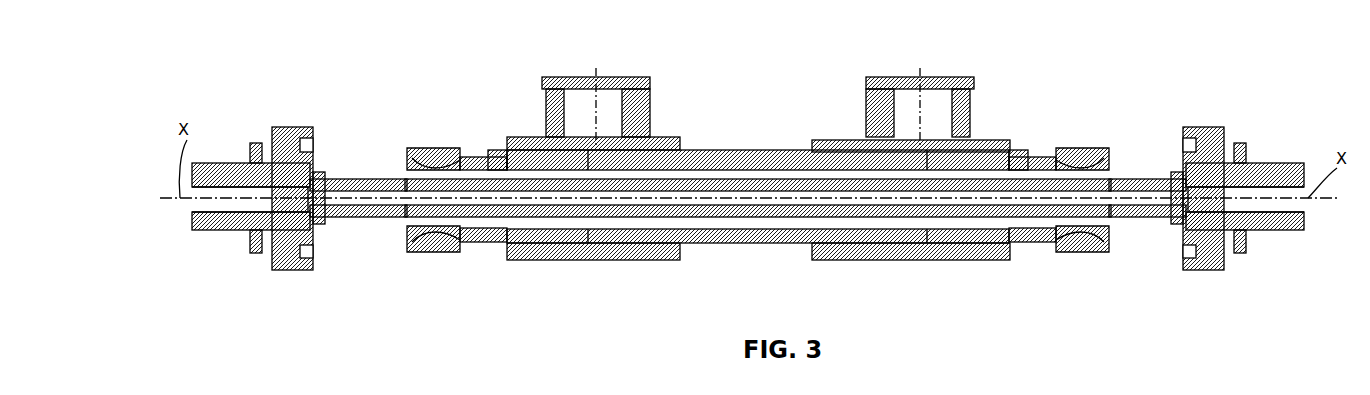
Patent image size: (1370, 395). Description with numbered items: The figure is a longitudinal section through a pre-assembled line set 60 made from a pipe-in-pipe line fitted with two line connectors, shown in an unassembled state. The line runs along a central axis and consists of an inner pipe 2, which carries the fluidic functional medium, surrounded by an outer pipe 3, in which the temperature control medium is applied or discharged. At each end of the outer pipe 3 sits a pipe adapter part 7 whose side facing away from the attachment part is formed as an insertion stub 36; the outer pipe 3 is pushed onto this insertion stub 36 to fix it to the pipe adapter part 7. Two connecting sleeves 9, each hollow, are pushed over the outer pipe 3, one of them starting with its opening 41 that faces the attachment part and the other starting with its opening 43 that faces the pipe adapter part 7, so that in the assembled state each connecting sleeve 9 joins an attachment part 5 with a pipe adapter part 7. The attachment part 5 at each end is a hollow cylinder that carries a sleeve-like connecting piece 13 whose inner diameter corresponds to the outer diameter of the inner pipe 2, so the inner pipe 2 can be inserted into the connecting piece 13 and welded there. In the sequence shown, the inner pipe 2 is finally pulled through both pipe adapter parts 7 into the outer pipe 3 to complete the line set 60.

The line set 60 is at (398, 84).
The inner pipe 2 is at (721, 182).
The outer pipe 3 is at (783, 150).
The attachment part 5 is at (288, 292).
The pipe adapter part 7 is at (463, 152).
The connecting sleeve 9 is at (650, 137).
The connecting piece 13 is at (377, 218).
The insertion stub 36 is at (540, 250).
The opening 41 is at (1006, 150).
The opening 43 is at (690, 147).